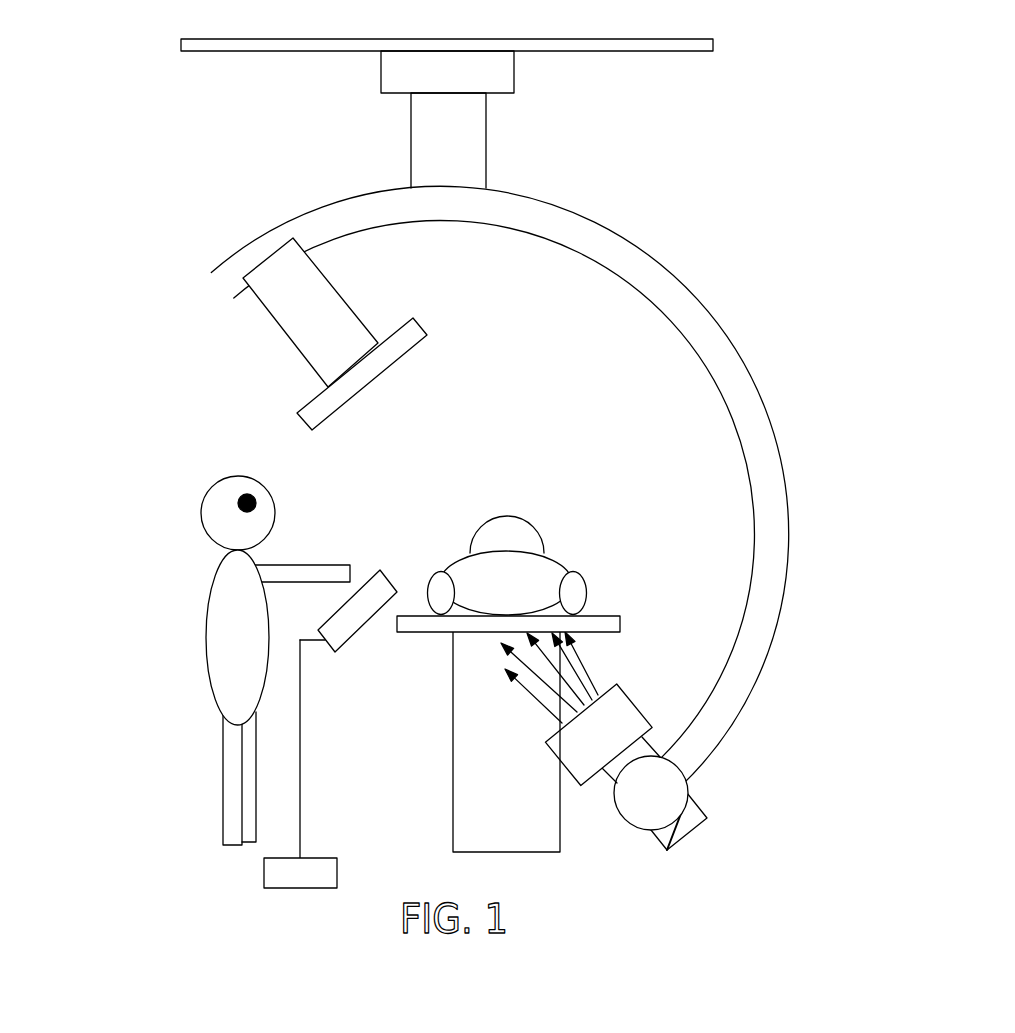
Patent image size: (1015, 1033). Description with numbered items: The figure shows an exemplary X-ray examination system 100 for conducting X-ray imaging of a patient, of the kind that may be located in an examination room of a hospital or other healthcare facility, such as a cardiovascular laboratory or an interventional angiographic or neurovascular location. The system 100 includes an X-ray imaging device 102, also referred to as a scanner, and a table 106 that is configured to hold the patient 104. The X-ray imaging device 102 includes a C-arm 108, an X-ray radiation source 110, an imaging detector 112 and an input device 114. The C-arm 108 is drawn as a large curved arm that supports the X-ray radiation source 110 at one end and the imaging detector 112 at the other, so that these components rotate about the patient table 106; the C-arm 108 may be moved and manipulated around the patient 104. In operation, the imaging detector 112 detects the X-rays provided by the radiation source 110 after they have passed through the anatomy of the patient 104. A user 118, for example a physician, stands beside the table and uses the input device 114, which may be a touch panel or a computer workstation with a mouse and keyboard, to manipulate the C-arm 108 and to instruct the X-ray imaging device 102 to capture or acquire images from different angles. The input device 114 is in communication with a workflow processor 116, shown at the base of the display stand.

The X-ray examination system 100 is at (959, 71).
The X-ray imaging device 102 is at (762, 263).
The patient 104 is at (517, 515).
The table 106 is at (608, 620).
The C-arm 108 is at (380, 223).
The X-ray radiation source 110 is at (682, 827).
The imaging detector 112 is at (267, 257).
The input device 114 is at (335, 652).
The workflow processor 116 is at (273, 875).
The user 118 is at (217, 575).